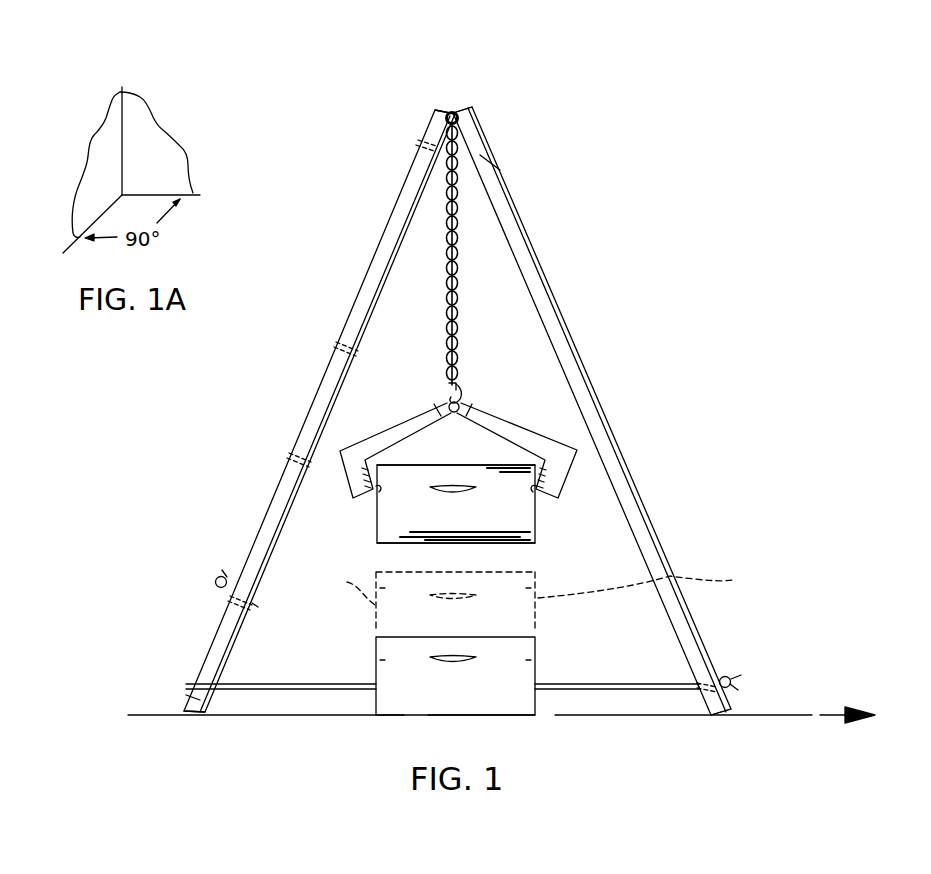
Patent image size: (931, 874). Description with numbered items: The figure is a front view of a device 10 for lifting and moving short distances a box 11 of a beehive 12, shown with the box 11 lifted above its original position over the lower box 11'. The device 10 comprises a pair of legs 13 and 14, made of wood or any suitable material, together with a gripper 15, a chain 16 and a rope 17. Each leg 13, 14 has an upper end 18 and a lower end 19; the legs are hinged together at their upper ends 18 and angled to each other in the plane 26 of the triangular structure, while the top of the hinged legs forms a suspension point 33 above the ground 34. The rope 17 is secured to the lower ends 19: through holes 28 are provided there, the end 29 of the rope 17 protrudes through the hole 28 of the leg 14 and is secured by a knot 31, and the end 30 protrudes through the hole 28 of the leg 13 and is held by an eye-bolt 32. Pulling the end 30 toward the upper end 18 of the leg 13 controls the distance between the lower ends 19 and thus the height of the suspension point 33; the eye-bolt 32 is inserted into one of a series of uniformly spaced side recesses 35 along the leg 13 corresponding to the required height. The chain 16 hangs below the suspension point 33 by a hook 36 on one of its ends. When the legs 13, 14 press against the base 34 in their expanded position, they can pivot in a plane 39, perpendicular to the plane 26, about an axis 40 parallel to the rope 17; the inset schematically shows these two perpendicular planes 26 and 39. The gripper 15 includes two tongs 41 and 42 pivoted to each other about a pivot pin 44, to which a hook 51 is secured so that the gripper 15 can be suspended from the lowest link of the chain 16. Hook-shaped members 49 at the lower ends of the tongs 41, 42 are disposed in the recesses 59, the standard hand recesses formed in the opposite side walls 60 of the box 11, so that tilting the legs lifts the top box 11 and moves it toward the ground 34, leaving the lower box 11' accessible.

In FIG. 1, the device 10 is at (287, 120).
In FIG. 1, the box 11 is at (539, 542).
In FIG. 1, the lower box 11' is at (498, 676).
In FIG. 1, the beehive 12 is at (368, 640).
In FIG. 1, the leg 13 is at (267, 508).
In FIG. 1, the leg 14 is at (695, 630).
In FIG. 1, the gripper 15 is at (525, 451).
In FIG. 1, the chain 16 is at (458, 240).
In FIG. 1, the rope 17 is at (270, 691).
In FIG. 1, the upper end 18 is at (425, 118).
In FIG. 1, the lower end 19 is at (185, 718).
In FIG. 1A, the plane 26 is at (190, 157).
In FIG. 1, the through hole 28 is at (711, 679).
In FIG. 1, the end of rope 29 is at (693, 688).
In FIG. 1, the end of rope 30 is at (218, 577).
In FIG. 1, the knot 31 is at (733, 688).
In FIG. 1, the eye-bolt 32 is at (216, 587).
In FIG. 1, the suspension point 33 is at (453, 111).
In FIG. 1, the ground 34 is at (346, 717).
In FIG. 1, the side recesses 35 is at (418, 144).
In FIG. 1, the hook 36 is at (488, 161).
In FIG. 1A, the plane 39 is at (88, 158).
In FIG. 1, the axis 40 is at (833, 718).
In FIG. 1, the tong 41 is at (352, 445).
In FIG. 1, the tong 42 is at (568, 480).
In FIG. 1, the pivot pin 44 is at (448, 400).
In FIG. 1, the hook-shaped members 49 is at (380, 492).
In FIG. 1, the hook 51 is at (463, 388).
In FIG. 1, the recesses 59 is at (380, 541).
In FIG. 1, the side walls 60 is at (539, 588).